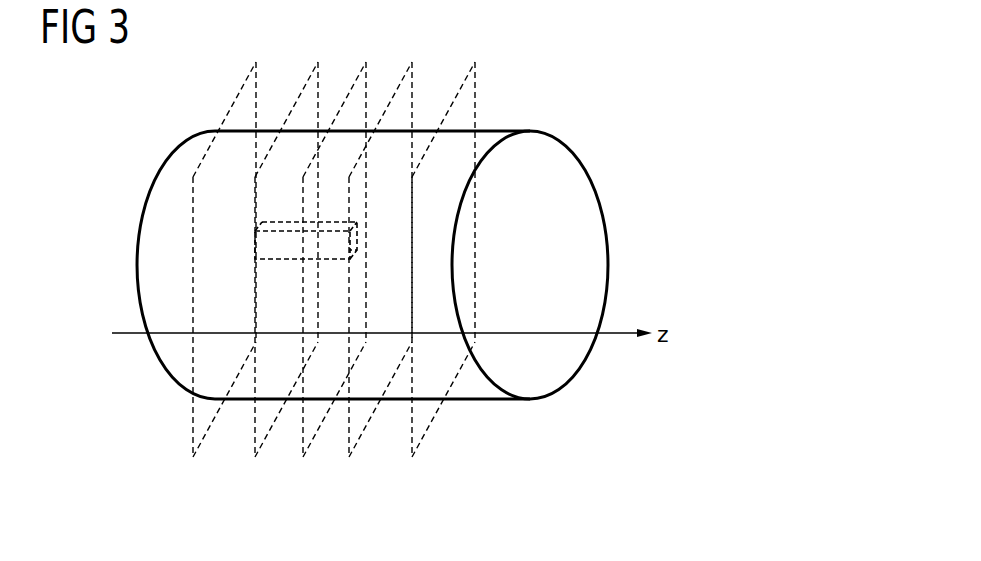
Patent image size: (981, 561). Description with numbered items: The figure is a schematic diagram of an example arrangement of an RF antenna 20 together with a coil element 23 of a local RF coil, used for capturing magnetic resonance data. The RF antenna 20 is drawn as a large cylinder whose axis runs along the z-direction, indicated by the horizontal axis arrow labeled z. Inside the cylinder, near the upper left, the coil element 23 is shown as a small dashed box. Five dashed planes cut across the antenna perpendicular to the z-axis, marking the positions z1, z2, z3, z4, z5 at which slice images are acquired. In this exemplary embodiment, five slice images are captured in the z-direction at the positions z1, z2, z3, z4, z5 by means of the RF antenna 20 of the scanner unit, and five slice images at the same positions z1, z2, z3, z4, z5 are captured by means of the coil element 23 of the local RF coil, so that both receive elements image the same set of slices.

The RF antenna 20 is at (598, 195).
The coil element 23 is at (267, 245).
The position z1 is at (214, 259).
The position z2 is at (269, 259).
The position z3 is at (321, 259).
The position z4 is at (369, 259).
The position z5 is at (427, 259).